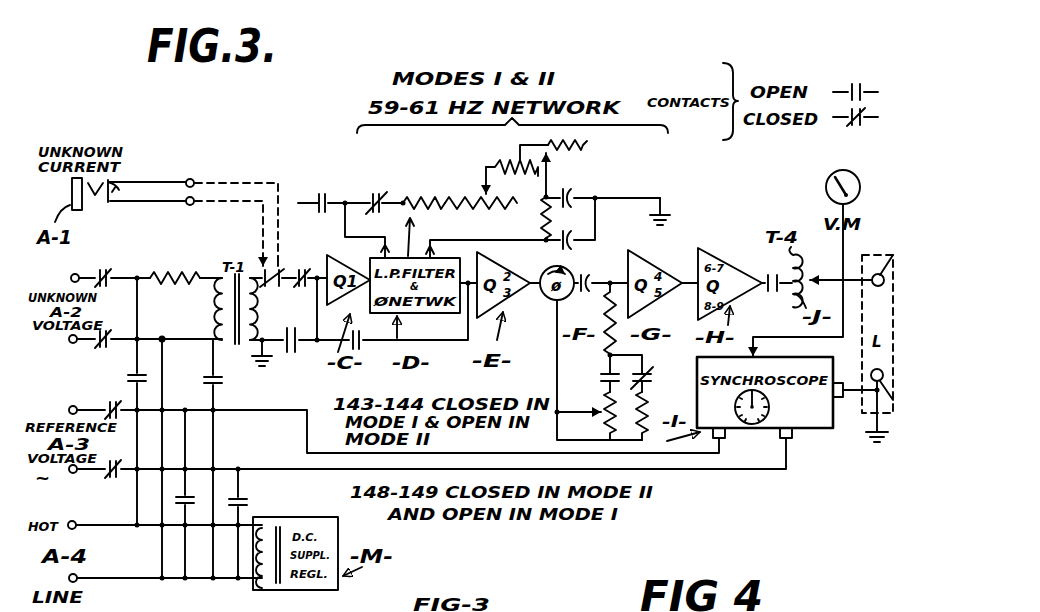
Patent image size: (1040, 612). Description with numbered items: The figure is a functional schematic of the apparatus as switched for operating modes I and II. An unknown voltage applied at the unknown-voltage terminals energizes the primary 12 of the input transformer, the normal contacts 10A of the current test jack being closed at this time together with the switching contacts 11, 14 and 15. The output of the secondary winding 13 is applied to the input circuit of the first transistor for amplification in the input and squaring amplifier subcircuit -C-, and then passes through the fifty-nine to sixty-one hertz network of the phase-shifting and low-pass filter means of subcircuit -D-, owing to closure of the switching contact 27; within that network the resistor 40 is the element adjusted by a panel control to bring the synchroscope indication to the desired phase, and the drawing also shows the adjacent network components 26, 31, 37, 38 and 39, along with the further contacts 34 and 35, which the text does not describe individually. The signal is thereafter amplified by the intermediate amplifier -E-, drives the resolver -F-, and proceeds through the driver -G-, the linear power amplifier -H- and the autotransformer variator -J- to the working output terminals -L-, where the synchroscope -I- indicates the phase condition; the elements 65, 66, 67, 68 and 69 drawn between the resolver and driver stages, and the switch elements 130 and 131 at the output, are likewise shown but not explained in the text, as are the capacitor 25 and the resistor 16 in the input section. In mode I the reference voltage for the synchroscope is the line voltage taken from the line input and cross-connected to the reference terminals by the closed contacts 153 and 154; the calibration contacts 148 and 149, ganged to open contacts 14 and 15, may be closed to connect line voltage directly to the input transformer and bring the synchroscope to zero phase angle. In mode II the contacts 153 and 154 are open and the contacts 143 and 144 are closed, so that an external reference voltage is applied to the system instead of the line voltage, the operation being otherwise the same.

The normal contacts of the current test jack 10A is at (112, 188).
The switching contacts 11 is at (302, 270).
The primary of the input transformer 12 is at (222, 316).
The secondary winding of the input transformer 13 is at (272, 314).
The switching contacts 14 is at (107, 270).
The switching contacts 15 is at (104, 328).
The resistor 16 is at (172, 275).
The capacitor 25 is at (292, 356).
The capacitor 26 is at (321, 192).
The switching contact 27 is at (374, 192).
The resistor 31 is at (540, 224).
The contact 34 is at (572, 190).
The contact 35 is at (574, 243).
The resistor 37 is at (410, 195).
The potentiometer 38 is at (484, 198).
The resistor 39 is at (517, 171).
The network resistor 40 is at (550, 136).
The resistor 65 is at (606, 312).
The capacitor 66 is at (604, 380).
The variable capacitor 67 is at (652, 380).
The potentiometer 68 is at (603, 412).
The resistor 69 is at (650, 412).
The switch 130 is at (880, 245).
The switch 131 is at (897, 402).
The switching contacts 143 is at (114, 424).
The switching contacts 144 is at (116, 492).
The calibration switching contacts 148 is at (128, 381).
The calibration switching contacts 149 is at (224, 381).
The switching contacts 153 is at (200, 508).
The switching contacts 154 is at (265, 502).